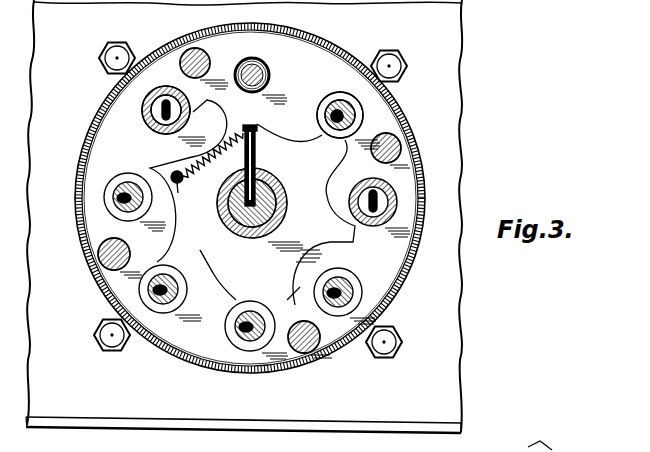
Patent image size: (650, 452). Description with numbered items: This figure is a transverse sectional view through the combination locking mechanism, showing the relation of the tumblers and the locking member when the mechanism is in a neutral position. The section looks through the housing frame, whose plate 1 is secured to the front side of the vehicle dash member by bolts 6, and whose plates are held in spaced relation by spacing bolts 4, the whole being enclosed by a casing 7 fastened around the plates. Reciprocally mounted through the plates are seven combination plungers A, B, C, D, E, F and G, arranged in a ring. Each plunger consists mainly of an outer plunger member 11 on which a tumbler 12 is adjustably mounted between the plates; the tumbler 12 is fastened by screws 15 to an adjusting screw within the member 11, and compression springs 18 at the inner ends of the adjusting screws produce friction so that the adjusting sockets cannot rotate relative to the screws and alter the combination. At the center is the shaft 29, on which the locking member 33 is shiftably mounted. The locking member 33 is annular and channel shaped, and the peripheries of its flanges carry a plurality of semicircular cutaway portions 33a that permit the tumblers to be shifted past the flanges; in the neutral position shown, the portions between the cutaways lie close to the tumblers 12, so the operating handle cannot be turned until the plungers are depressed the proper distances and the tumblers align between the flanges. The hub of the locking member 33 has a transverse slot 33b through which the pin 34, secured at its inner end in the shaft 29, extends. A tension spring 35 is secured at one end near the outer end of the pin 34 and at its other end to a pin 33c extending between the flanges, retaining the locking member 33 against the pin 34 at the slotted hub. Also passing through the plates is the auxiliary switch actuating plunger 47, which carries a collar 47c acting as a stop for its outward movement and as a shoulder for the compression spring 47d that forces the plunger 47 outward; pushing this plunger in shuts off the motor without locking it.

The plate 1 is at (289, 44).
The casing 7 is at (337, 55).
The spacing bolts 4 is at (194, 50).
The bolts 6 is at (121, 47).
The plunger member 11 is at (150, 133).
The tumbler 12 is at (148, 122).
The screws 15 is at (168, 95).
The compression springs 18 is at (328, 112).
The shaft 29 is at (285, 210).
The locking member 33 is at (257, 236).
The cutaway portions 33a is at (207, 255).
The transverse slot 33b is at (271, 174).
The pin 33c is at (187, 188).
The pin 34 is at (257, 157).
The tension spring 35 is at (213, 161).
The auxiliary switch actuating plunger 47 is at (258, 70).
The collar 47c is at (244, 66).
The compression spring 47d is at (270, 76).
The combination plunger A is at (146, 108).
The combination plunger B is at (110, 207).
The combination plunger C is at (160, 304).
The combination plunger D is at (243, 341).
The combination plunger E is at (356, 293).
The combination plunger F is at (388, 194).
The combination plunger G is at (360, 115).